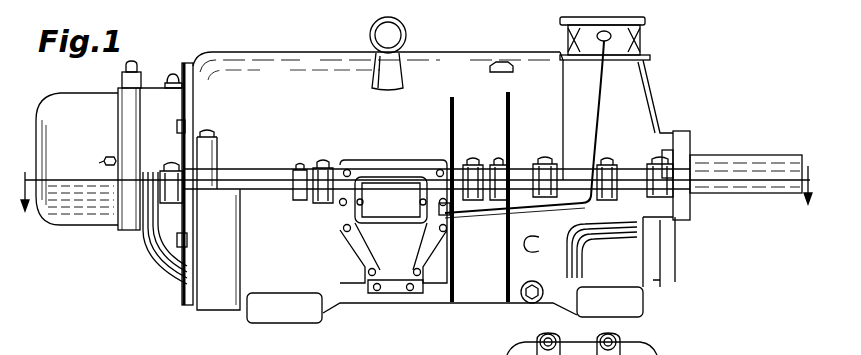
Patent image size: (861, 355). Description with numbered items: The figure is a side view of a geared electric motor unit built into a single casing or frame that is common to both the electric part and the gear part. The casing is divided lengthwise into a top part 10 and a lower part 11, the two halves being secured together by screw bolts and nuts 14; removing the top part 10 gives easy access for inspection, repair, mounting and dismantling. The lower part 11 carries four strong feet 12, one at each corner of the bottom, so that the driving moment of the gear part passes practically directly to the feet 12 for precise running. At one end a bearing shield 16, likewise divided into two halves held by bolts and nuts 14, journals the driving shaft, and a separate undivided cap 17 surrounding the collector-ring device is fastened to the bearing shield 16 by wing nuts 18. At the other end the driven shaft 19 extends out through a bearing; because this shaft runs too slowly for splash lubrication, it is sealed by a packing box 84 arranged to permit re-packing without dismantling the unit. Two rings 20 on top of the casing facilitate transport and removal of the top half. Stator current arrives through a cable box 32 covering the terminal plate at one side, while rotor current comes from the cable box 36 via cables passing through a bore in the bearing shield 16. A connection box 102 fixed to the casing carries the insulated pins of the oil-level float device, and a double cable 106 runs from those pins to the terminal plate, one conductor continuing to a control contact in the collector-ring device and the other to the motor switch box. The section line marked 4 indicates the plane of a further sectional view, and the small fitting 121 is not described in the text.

The section line 4- 4 is at (416, 209).
The top part of the casing 10 is at (256, 69).
The lower part of the casing 11 is at (224, 303).
The feet 12 is at (277, 318).
The nuts 14 is at (172, 164).
The bearing shield 16 is at (155, 256).
The cap 17 is at (80, 211).
The wing nuts 18 is at (109, 159).
The driven shaft 19 is at (737, 161).
The rings 20 is at (403, 29).
The cable box 32 is at (521, 344).
The cable box 36 is at (390, 178).
The packing box 84 is at (684, 158).
The connection box 102 is at (647, 30).
The double cable 106 is at (598, 105).
The knob 121 is at (135, 65).